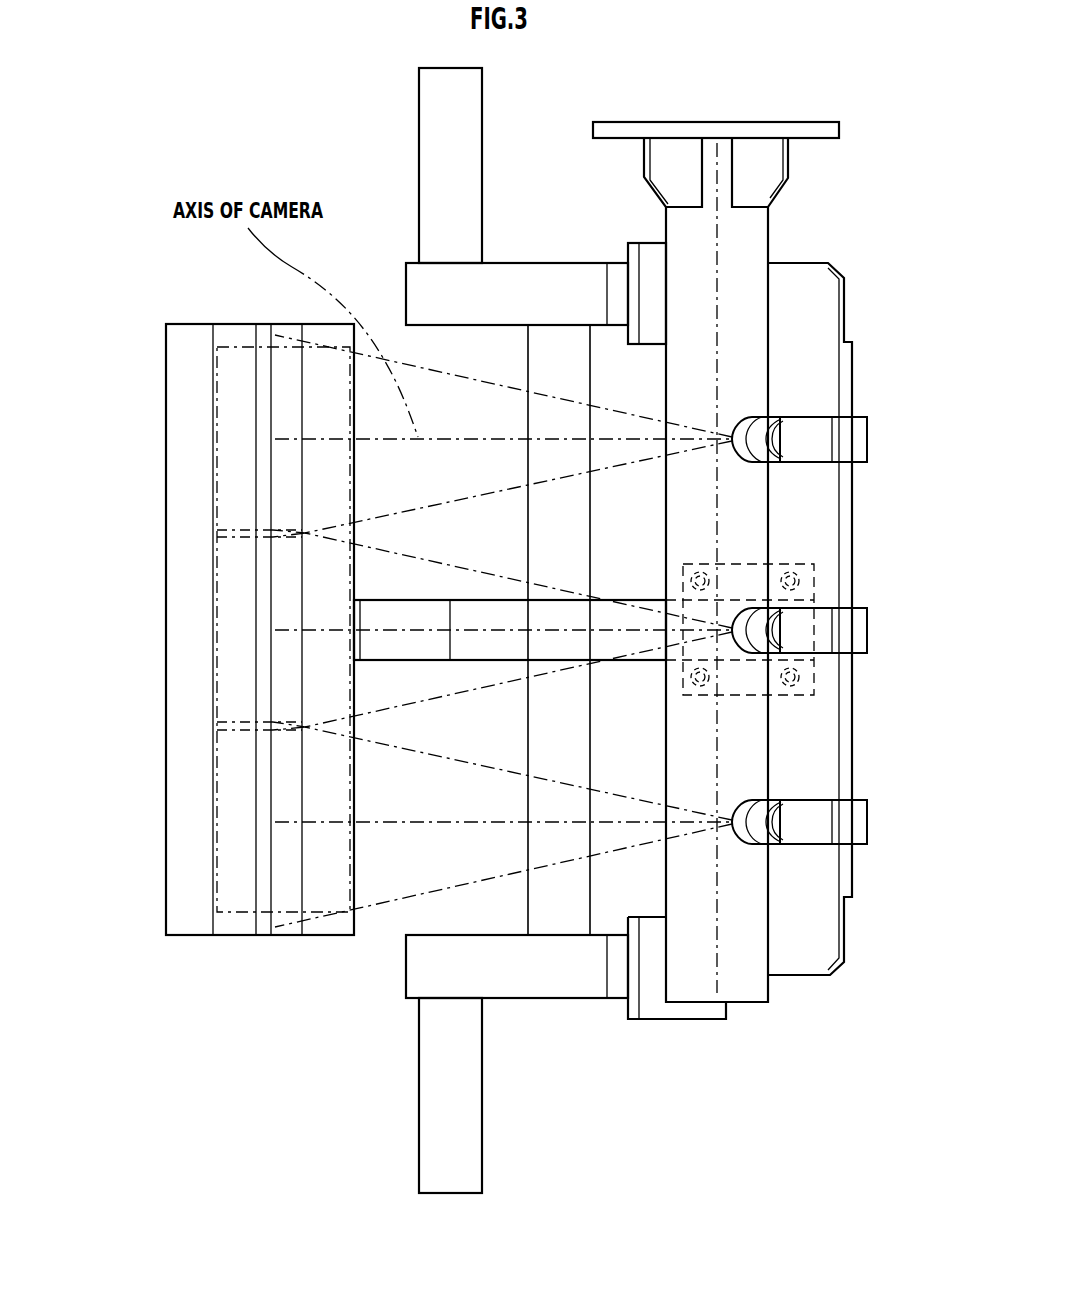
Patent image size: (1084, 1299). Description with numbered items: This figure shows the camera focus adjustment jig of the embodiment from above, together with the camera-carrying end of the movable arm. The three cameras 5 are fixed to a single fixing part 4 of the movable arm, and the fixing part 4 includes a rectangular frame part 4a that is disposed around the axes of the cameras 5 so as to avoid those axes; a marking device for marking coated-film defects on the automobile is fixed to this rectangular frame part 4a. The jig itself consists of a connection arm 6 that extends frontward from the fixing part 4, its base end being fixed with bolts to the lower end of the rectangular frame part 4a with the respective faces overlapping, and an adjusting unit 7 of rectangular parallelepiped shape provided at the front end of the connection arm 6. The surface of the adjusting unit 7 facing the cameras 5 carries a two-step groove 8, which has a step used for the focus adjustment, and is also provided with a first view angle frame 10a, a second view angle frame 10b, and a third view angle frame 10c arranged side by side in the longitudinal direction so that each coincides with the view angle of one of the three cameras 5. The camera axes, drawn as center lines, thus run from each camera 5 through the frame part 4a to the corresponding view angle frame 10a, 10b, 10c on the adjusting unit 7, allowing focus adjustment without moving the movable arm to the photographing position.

The fixing part 4 is at (748, 231).
The rectangular frame part 4a is at (558, 918).
The camera 5 is at (850, 439).
The connection arm 6 is at (482, 650).
The adjusting unit 7 is at (236, 925).
The two-step groove 8 is at (283, 890).
The first view angle frame 10a is at (217, 823).
The camera axis b 10b is at (217, 634).
The third view angle frame 10c is at (217, 436).